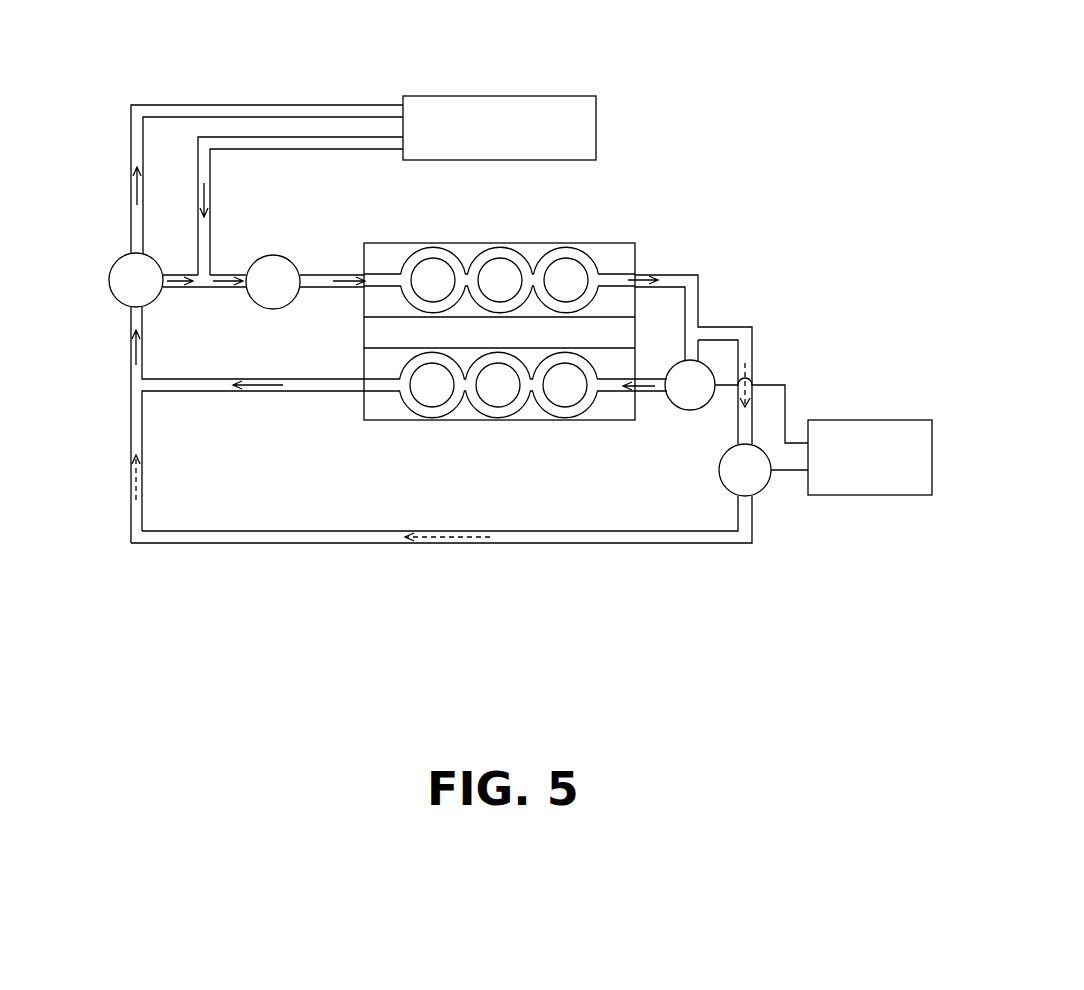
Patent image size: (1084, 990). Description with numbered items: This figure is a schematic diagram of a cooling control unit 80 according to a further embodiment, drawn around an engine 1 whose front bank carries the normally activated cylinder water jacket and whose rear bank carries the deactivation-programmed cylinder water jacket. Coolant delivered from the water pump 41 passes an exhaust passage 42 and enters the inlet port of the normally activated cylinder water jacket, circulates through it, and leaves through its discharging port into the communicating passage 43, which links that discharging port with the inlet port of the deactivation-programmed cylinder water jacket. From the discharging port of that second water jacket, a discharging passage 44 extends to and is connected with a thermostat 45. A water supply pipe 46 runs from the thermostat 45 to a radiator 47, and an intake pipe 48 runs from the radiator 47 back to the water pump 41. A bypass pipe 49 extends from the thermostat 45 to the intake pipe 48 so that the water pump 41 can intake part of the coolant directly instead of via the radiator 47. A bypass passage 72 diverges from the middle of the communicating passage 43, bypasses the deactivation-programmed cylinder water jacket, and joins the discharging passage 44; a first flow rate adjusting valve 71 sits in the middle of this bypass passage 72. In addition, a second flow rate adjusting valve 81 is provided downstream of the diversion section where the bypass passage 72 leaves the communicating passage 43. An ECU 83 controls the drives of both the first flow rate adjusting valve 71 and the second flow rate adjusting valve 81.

The engine 1 is at (503, 328).
The water pump 41 is at (278, 255).
The exhaust passage 42 is at (333, 290).
The communicating passage 43 is at (685, 330).
The discharging passage 44 is at (145, 343).
The thermostat 45 is at (108, 262).
The water supply pipe 46 is at (200, 103).
The radiator 47 is at (496, 95).
The intake pipe 48 is at (228, 274).
The bypass pipe 49 is at (176, 273).
The first flow rate adjusting valve 71 is at (720, 478).
The bypass passage 72 is at (468, 543).
The cooling control unit 80 is at (692, 127).
The second flow rate adjusting valve 81 is at (690, 410).
The ECU 83 is at (868, 420).